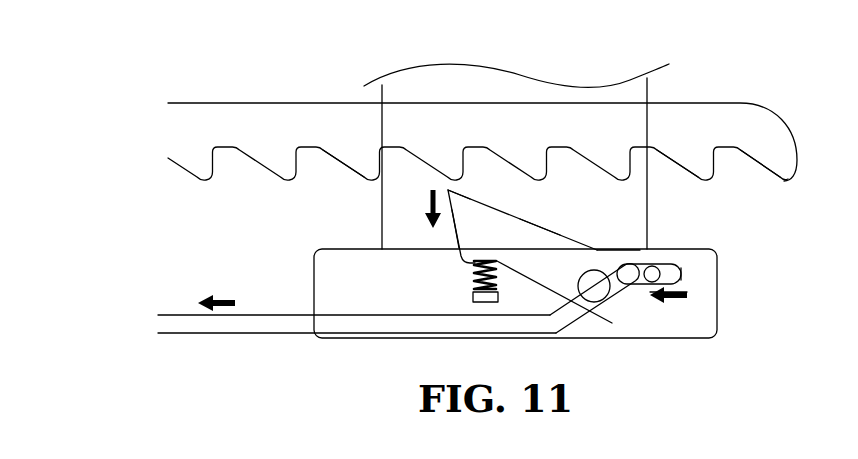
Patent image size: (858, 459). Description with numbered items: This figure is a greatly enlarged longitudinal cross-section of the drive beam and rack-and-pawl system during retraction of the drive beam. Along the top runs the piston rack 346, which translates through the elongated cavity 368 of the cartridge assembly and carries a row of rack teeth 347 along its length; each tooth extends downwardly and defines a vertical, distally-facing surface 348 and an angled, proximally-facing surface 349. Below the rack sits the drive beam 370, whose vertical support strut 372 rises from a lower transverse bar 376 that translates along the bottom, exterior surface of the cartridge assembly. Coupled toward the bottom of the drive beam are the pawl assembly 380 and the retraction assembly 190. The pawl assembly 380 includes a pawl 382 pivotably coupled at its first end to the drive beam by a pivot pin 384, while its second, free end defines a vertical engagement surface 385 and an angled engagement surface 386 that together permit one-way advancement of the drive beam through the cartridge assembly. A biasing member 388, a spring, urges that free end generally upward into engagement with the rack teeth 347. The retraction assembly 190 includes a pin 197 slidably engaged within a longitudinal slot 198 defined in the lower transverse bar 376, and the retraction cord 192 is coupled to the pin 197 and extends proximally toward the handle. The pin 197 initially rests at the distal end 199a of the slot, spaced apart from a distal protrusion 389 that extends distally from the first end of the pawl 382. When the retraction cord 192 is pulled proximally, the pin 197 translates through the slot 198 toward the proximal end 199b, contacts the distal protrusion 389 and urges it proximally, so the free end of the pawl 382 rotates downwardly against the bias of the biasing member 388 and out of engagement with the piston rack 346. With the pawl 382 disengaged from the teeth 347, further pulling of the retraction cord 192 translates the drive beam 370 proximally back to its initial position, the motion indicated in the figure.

The retraction cord 192 is at (181, 325).
The piston rack 346 is at (247, 122).
The rack teeth 347 is at (780, 162).
The vertical distally-facing surface 348 is at (212, 160).
The angled proximally-facing surface 349 is at (340, 170).
The elongated cavity 368 is at (223, 232).
The drive beam 370 is at (480, 80).
The vertical support strut 372 is at (640, 195).
The lower transverse bar 376 is at (707, 329).
The pawl assembly 380 is at (553, 230).
The pawl 382 is at (495, 236).
The pivot pin 384 is at (594, 283).
The vertical engagement surface 385 is at (450, 238).
The angled engagement surface 386 is at (475, 195).
The biasing member 388 is at (472, 278).
The distal protrusion 389 is at (620, 246).
The longitudinal slot 198 is at (675, 271).
The pin 197 is at (651, 283).
The distal end of slot 199a is at (684, 278).
The proximal end of slot 199b is at (624, 272).
The retraction assembly 190 is at (667, 313).